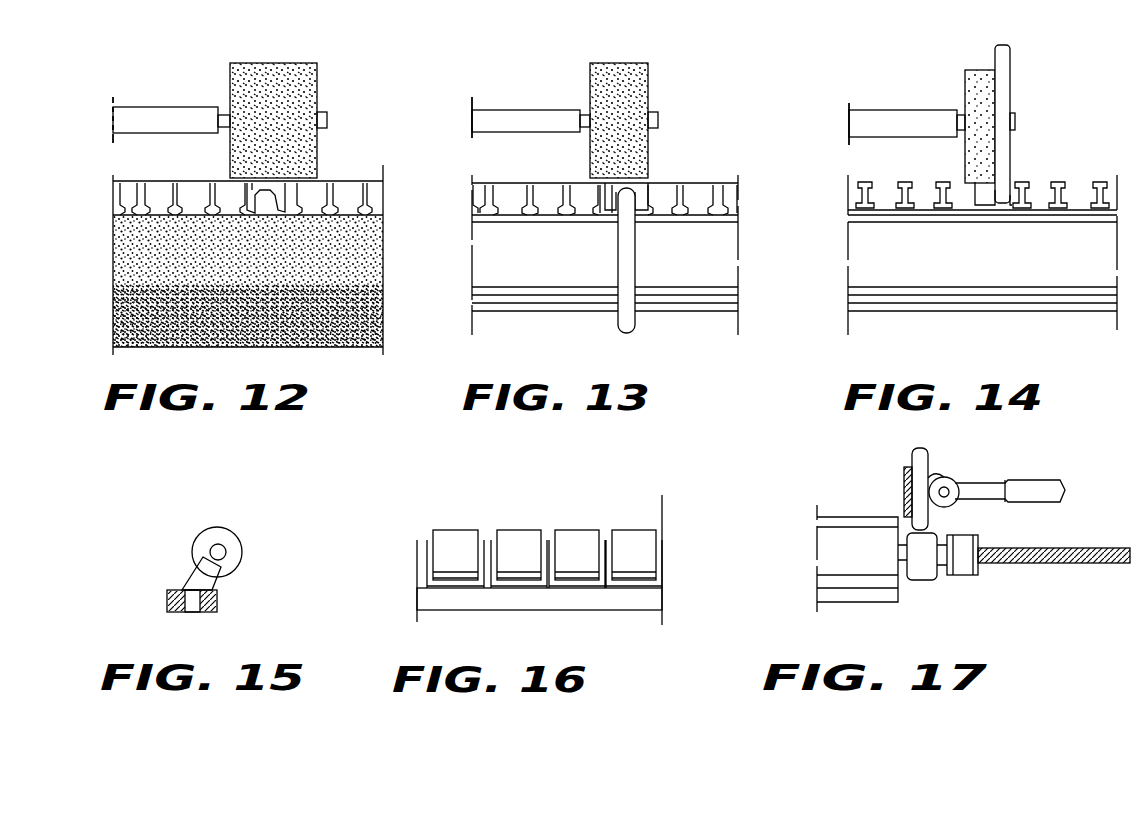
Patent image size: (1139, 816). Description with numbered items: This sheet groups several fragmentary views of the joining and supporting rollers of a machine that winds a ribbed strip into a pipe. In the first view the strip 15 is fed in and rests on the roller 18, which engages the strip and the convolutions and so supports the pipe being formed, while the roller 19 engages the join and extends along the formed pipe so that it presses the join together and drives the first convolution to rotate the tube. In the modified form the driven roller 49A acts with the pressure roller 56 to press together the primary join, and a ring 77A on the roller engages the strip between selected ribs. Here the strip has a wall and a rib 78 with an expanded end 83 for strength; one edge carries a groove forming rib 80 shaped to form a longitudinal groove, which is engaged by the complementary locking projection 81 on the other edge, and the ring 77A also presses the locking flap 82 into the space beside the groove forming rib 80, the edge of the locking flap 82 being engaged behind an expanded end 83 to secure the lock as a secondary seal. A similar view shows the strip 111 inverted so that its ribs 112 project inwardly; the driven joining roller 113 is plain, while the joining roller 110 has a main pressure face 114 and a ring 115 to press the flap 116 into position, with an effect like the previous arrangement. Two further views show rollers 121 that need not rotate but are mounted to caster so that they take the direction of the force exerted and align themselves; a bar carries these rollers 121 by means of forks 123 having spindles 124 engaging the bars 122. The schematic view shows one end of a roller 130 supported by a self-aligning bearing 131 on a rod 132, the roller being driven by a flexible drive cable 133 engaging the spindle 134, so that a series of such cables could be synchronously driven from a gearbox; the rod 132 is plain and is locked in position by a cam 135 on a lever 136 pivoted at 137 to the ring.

In FIG. 12, the joining roller 19 is at (318, 90).
In FIG. 12, the strip 15 is at (346, 181).
In FIG. 12, the joining roller 18 is at (345, 350).
In FIG. 13, the pressure roller 56 is at (650, 92).
In FIG. 13, the rib 78 is at (713, 182).
In FIG. 13, the expanded end 83 is at (530, 214).
In FIG. 13, the groove forming rib 80 is at (596, 214).
In FIG. 13, the locking projection 81 is at (605, 195).
In FIG. 13, the locking flap 82 is at (641, 195).
In FIG. 13, the roller 49A is at (525, 290).
In FIG. 13, the ring 77A is at (638, 322).
In FIG. 14, the joining roller 110 is at (965, 88).
In FIG. 14, the ring 115 is at (1010, 90).
In FIG. 14, the main pressure face 114 is at (978, 70).
In FIG. 14, the ribs 112 is at (874, 196).
In FIG. 14, the strip 111 is at (1018, 190).
In FIG. 14, the flap 116 is at (1015, 206).
In FIG. 14, the driven joining roller 113 is at (1010, 298).
In FIG. 15, the rollers 121 is at (193, 549).
In FIG. 16, the rollers 121 is at (630, 528).
In FIG. 15, the forks 123 is at (180, 575).
In FIG. 16, the forks 123 is at (427, 565).
In FIG. 15, the bars 122 is at (168, 600).
In FIG. 16, the bars 122 is at (645, 598).
In FIG. 15, the spindles 124 is at (219, 602).
In FIG. 17, the roller 130 is at (840, 528).
In FIG. 17, the self-aligning bearing 131 is at (904, 472).
In FIG. 17, the rod 132 is at (910, 452).
In FIG. 17, the flexible drive cable 133 is at (1040, 563).
In FIG. 17, the spindle 134 is at (946, 575).
In FIG. 17, the cam 135 is at (940, 488).
In FIG. 17, the lever 136 is at (1040, 483).
In FIG. 17, the pivot 137 is at (950, 496).